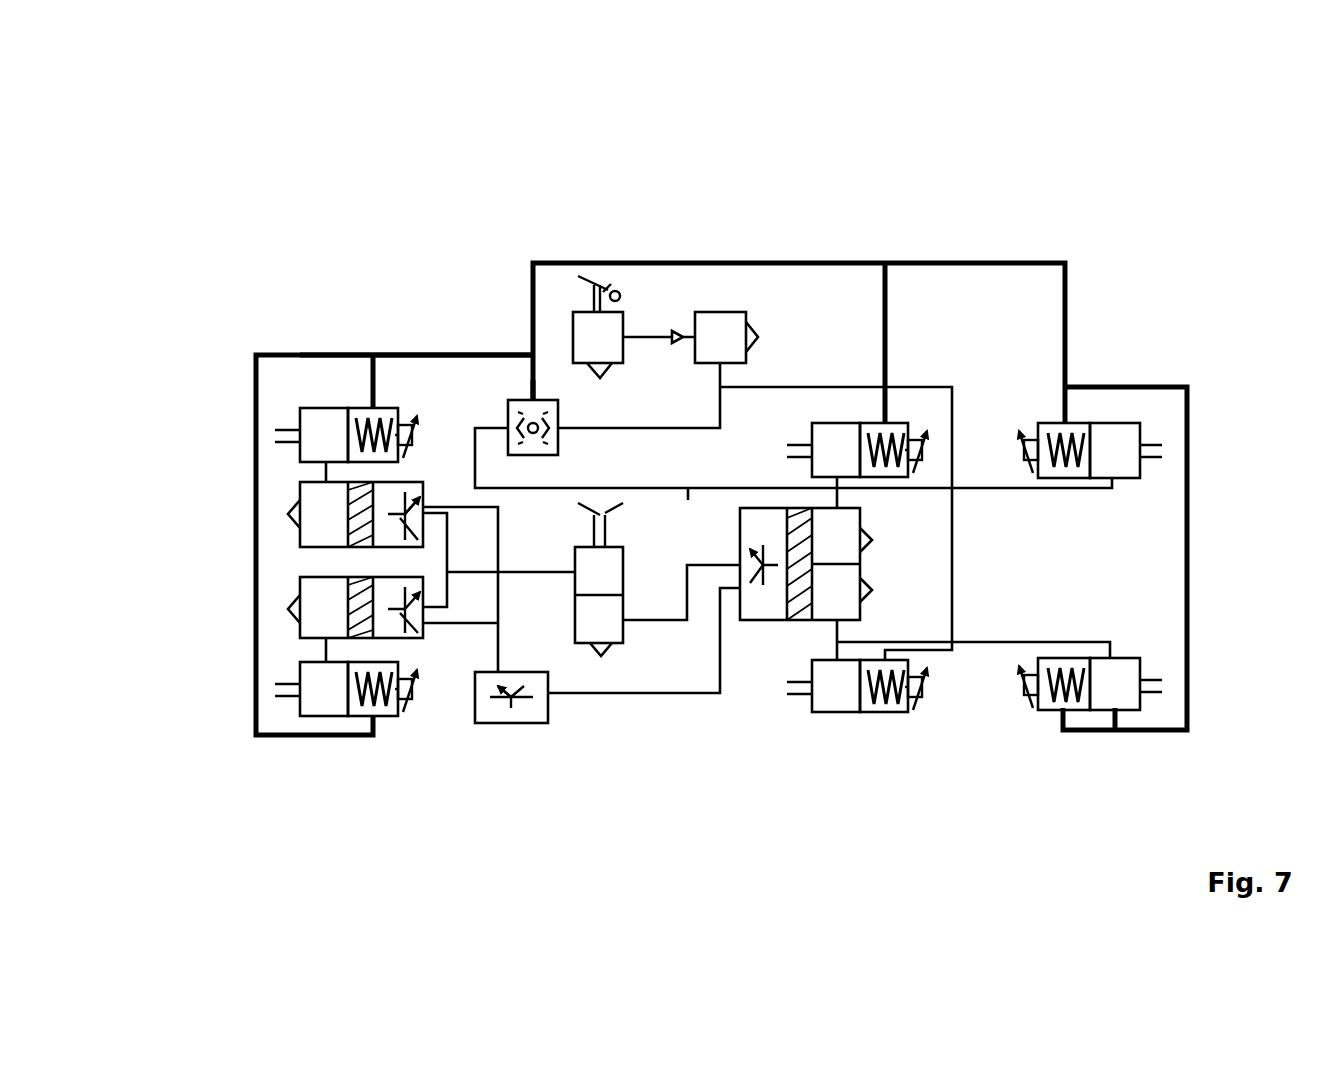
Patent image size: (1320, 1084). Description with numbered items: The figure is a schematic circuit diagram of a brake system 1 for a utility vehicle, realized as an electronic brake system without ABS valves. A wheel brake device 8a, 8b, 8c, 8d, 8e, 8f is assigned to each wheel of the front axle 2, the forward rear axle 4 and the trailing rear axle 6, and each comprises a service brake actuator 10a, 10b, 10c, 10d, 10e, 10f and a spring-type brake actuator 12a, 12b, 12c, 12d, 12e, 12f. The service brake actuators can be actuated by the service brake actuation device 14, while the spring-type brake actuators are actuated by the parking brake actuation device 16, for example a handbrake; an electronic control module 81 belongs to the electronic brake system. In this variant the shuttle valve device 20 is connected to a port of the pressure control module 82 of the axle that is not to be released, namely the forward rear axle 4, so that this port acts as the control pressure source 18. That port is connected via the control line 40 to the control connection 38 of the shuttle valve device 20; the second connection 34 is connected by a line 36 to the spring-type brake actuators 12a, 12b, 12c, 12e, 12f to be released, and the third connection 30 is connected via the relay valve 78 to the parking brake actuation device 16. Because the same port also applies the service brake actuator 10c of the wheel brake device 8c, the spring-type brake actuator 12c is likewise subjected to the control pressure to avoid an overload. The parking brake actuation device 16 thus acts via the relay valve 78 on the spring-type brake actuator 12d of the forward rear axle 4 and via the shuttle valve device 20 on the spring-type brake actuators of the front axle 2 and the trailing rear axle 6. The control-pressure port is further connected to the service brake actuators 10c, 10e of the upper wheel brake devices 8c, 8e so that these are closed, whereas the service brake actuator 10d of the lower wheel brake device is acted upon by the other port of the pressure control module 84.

The brake system 1 is at (193, 187).
The front axle 2 is at (315, 785).
The forward rear axle 4 is at (876, 773).
The trailing rear axle 6 is at (1081, 783).
The wheel brake device 8a is at (297, 423).
The wheel brake device 8b is at (297, 671).
The wheel brake device 8c is at (862, 421).
The wheel brake device 8d is at (866, 714).
The wheel brake device 8e is at (1145, 432).
The wheel brake device 8f is at (1145, 666).
The service brake actuator 10a is at (313, 408).
The service brake actuator 10b is at (312, 716).
The service brake actuator 10c is at (840, 423).
The service brake actuator 10d is at (835, 712).
The service brake actuator 10e is at (1120, 423).
The service brake actuator 10f is at (1115, 710).
The spring-type brake actuator 12a is at (378, 408).
The spring-type brake actuator 12b is at (383, 716).
The spring-type brake actuator 12c is at (893, 423).
The spring-type brake actuator 12d is at (898, 712).
The spring-type brake actuator 12e is at (1058, 423).
The spring-type brake actuator 12f is at (1045, 710).
The service brake actuation device 14 is at (580, 645).
The parking brake actuation device 16 is at (578, 312).
The control pressure source 18 is at (845, 533).
The shuttle valve device 20 is at (545, 400).
The third connection 30 is at (558, 428).
The second connection 34 is at (538, 400).
The line 36 is at (437, 355).
The control connection 38 is at (508, 425).
The control line 40 is at (688, 488).
The relay valve 78 is at (725, 312).
The electronic control module (ECU) 81 is at (512, 723).
The pressure control module 82 is at (862, 522).
The pressure control module 84 is at (872, 590).